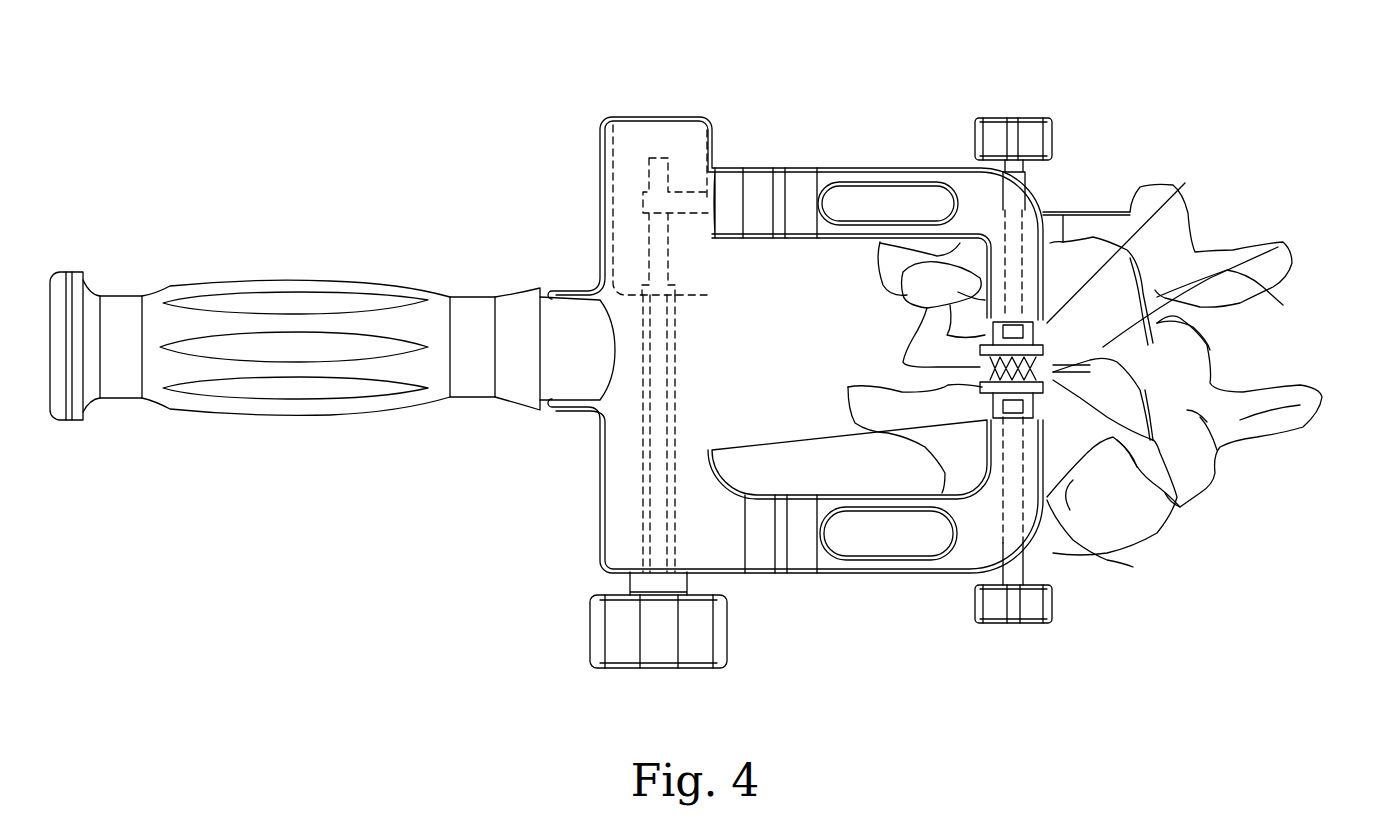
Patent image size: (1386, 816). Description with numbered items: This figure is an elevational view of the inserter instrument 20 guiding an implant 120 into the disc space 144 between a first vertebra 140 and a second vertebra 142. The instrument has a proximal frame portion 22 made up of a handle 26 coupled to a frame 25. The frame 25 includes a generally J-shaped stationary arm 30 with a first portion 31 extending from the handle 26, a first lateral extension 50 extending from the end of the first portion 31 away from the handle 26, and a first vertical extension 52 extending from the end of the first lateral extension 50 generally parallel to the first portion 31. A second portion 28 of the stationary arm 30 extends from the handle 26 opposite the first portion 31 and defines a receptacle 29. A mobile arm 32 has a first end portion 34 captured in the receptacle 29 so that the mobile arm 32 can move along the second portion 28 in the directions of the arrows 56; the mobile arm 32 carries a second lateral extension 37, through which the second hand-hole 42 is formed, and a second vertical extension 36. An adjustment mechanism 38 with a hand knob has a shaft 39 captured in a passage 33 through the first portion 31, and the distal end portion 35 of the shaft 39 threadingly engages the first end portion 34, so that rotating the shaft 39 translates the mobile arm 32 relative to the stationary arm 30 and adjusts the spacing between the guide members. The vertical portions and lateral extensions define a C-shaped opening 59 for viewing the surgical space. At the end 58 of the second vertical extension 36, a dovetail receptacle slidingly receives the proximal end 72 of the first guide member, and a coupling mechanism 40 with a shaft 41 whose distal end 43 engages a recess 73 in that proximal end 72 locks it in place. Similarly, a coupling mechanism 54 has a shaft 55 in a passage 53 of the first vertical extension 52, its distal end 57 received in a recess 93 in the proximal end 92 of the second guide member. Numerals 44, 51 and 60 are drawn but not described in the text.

The inserter instrument 20 is at (432, 128).
The proximal frame portion 22 is at (504, 452).
The frame 25 is at (597, 232).
The handle 26 is at (302, 270).
The second portion 28 is at (677, 117).
The receptacle 29 is at (632, 148).
The stationary arm 30 is at (701, 348).
The first portion 31 is at (628, 512).
The mobile arm 32 is at (848, 165).
The passage 33 is at (640, 433).
The first end portion 34 is at (690, 190).
The distal end portion 35 is at (658, 157).
The second vertical extension 36 is at (895, 292).
The second lateral extension 37 is at (800, 238).
The adjustment mechanism 38 is at (695, 668).
The shaft 39 is at (612, 573).
The coupling mechanism 40 is at (1052, 118).
The shaft 41 is at (1040, 195).
The second hand-hole 42 is at (893, 205).
The distal end 43 is at (1070, 225).
The rod 44 is at (1000, 200).
The first lateral extension 50 is at (797, 573).
The slot 51 is at (856, 543).
The first vertical extension 52 is at (1115, 560).
The passage 53 is at (1047, 537).
The coupling mechanism 54 is at (1052, 624).
The shaft 55 is at (1000, 543).
The arrows 56 is at (804, 36).
The distal end 57 is at (982, 427).
The end 58 is at (1120, 215).
The opening 59 is at (762, 458).
The lower vertebra 60 is at (1200, 458).
The proximal end 72 is at (905, 340).
The recess 73 is at (1072, 275).
The proximal end 92 is at (1135, 470).
The recess 93 is at (982, 402).
The implant 120 is at (1284, 305).
The first vertebra 140 is at (1283, 242).
The second vertebra 142 is at (1322, 397).
The disc space 144 is at (1030, 368).